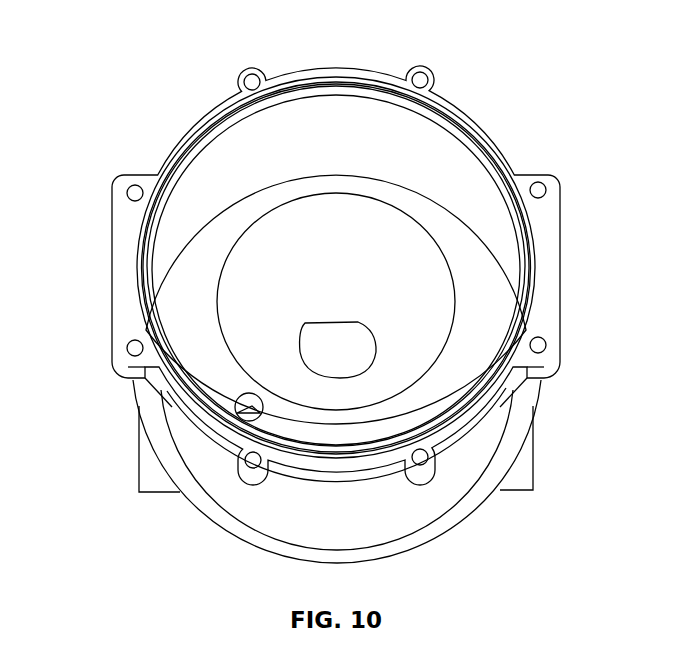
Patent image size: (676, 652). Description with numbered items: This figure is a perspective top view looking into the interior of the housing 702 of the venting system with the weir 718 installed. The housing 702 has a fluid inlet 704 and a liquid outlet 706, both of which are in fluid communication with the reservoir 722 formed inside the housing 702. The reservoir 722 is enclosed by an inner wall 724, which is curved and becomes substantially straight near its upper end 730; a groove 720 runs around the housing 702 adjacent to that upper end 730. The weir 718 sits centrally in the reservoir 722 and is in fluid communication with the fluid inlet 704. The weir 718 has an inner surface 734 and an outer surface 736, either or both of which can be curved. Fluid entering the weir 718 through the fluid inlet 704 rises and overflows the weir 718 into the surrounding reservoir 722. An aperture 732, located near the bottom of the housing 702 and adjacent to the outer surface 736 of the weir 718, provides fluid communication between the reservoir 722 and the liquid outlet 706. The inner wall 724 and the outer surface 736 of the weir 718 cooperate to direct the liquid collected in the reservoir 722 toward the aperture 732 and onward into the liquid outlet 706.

The housing 702 is at (72, 50).
The fluid inlet 704 is at (520, 460).
The liquid outlet 706 is at (153, 470).
The weir 718 is at (348, 283).
The groove 720 is at (467, 123).
The reservoir 722 is at (303, 163).
The inner wall 724 is at (330, 130).
The upper end 730 is at (210, 148).
The aperture 732 is at (233, 407).
The inner surface 734 is at (400, 306).
The outer surface 736 is at (365, 435).